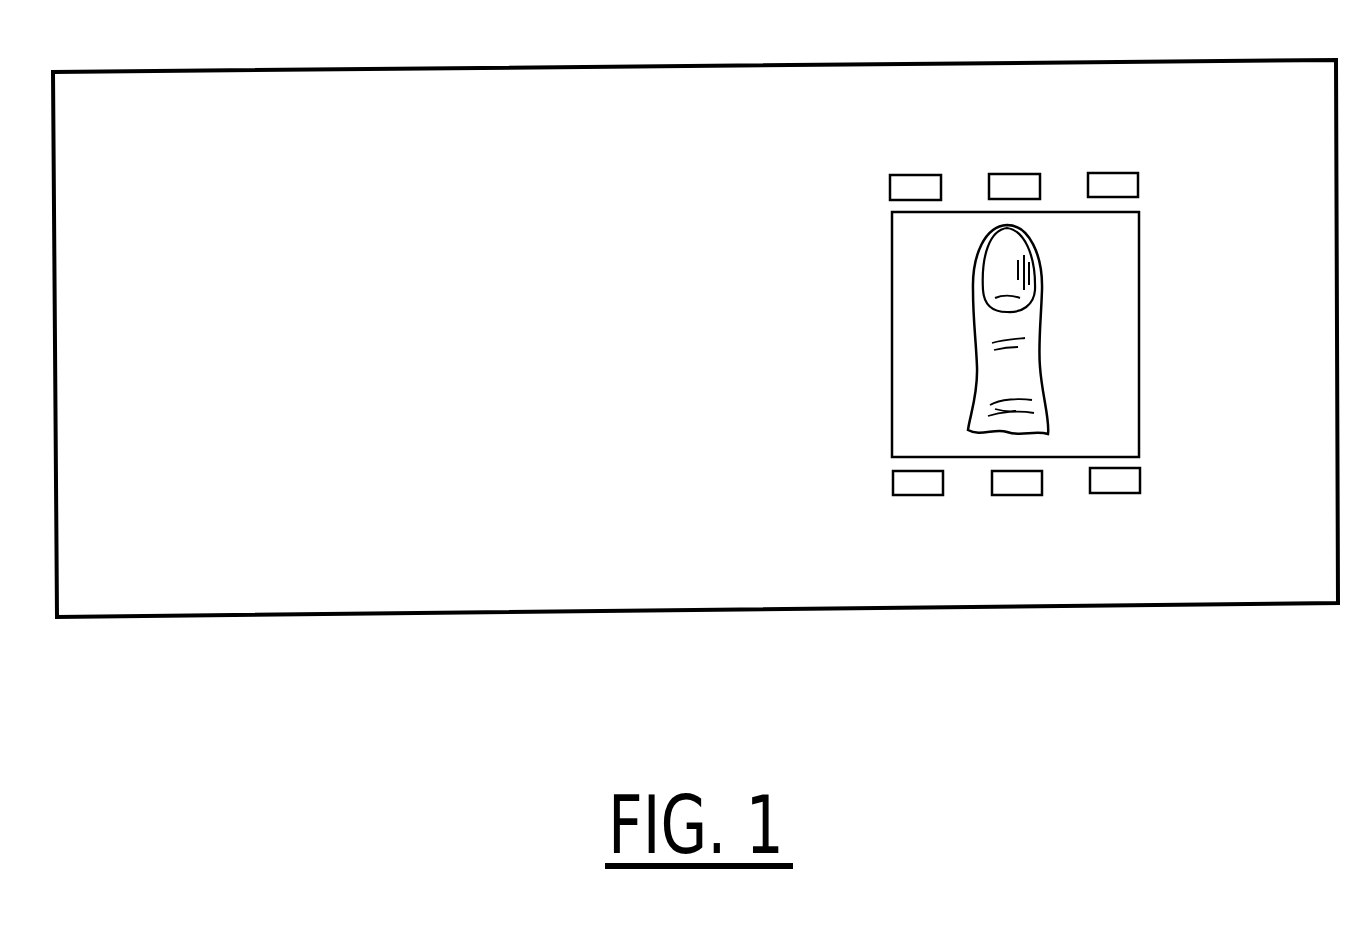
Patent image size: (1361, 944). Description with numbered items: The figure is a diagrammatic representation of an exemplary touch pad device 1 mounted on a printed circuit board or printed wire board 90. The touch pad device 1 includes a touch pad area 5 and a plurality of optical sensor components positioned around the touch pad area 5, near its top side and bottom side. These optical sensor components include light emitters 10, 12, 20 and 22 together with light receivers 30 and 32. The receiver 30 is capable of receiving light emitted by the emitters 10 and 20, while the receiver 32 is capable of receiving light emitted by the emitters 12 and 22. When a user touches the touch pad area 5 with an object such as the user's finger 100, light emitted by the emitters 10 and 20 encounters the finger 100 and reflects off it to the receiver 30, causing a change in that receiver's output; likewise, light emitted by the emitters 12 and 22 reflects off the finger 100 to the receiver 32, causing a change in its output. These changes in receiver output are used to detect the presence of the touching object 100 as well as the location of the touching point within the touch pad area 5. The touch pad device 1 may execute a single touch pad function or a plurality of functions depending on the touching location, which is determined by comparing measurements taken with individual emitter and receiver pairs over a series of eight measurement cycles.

The touch pad device 1 is at (1094, 94).
The touch pad area 5 is at (1139, 325).
The light emitter 10 is at (913, 175).
The light emitter 12 is at (918, 495).
The light emitter 20 is at (1110, 173).
The light emitter 22 is at (1115, 493).
The light receiver 30 is at (1012, 174).
The light receiver 32 is at (1017, 495).
The printed circuit board 90 is at (668, 92).
The finger 100 is at (992, 335).